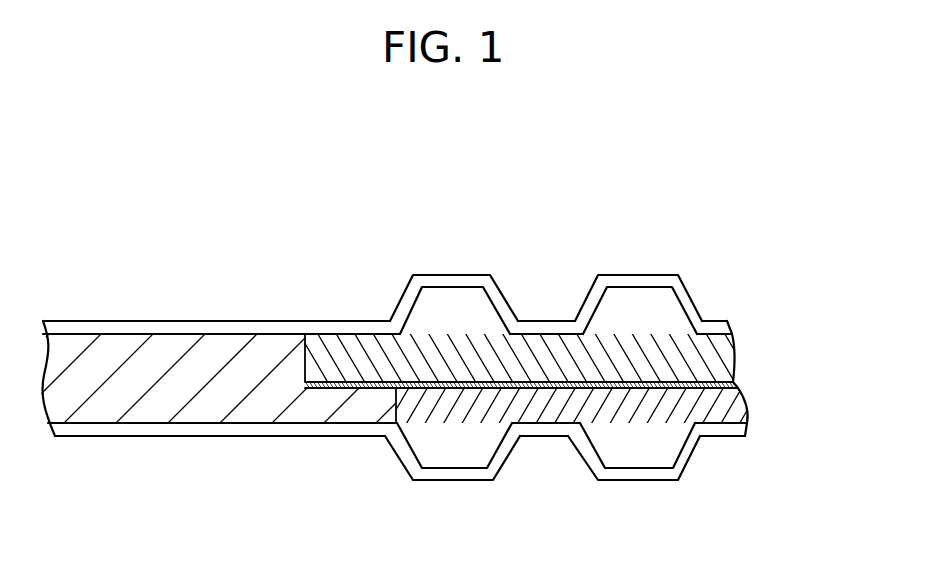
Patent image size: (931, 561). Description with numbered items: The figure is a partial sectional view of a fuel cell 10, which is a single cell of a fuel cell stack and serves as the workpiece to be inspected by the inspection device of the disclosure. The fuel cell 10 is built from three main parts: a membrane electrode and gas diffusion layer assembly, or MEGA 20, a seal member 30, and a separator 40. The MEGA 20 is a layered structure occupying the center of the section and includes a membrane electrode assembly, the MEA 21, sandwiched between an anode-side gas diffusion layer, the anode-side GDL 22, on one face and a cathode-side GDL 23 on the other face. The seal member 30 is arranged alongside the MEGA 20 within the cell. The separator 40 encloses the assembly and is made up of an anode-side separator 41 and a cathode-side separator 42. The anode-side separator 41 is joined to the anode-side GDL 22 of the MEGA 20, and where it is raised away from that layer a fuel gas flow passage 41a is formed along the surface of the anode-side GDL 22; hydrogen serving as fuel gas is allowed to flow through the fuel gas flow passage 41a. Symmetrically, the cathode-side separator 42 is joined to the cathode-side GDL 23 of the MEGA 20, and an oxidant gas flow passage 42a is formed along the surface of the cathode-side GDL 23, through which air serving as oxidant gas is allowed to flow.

The fuel cell 10 is at (373, 220).
The membrane electrode and gas diffusion layer assembly (MEGA) 20 is at (808, 338).
The membrane electrode assembly (MEA) 21 is at (733, 382).
The anode-side gas diffusion layer (GDL) 22 is at (723, 350).
The cathode-side gas diffusion layer (GDL) 23 is at (733, 405).
The seal member 30 is at (230, 393).
The separator 40 is at (170, 309).
The anode-side separator 41 is at (475, 275).
The fuel gas flow passage 41a is at (447, 303).
The cathode-side separator 42 is at (476, 483).
The oxidant gas flow passage 42a is at (445, 452).